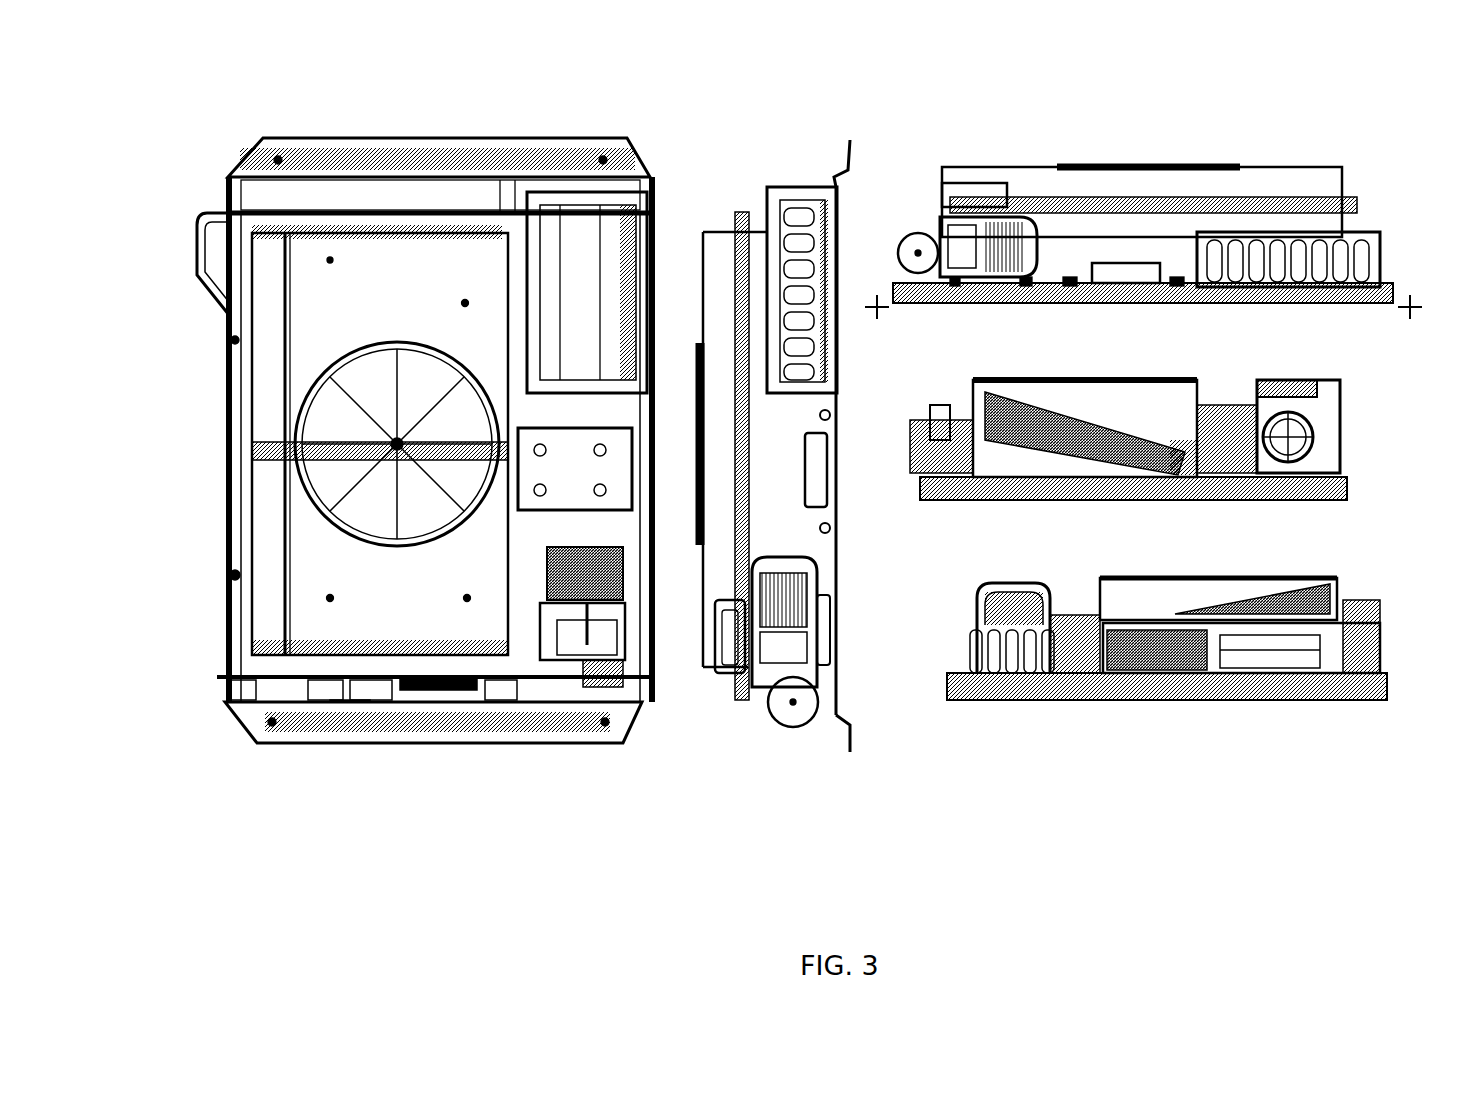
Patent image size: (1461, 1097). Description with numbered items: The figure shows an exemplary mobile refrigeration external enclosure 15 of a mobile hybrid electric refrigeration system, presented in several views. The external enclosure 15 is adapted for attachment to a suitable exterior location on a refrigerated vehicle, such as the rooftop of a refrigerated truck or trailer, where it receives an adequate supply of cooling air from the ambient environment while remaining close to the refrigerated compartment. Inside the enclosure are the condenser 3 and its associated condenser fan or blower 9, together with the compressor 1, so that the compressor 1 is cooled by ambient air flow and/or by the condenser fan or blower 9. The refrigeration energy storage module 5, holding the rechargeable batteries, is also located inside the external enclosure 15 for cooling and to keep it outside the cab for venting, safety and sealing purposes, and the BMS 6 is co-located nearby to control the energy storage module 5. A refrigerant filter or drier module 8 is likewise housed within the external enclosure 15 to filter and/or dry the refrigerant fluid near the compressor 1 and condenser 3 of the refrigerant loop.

The compressor 1 is at (608, 688).
The condenser 3 is at (393, 295).
The refrigeration energy storage module 5 is at (549, 182).
The BMS 6 is at (628, 465).
The refrigerant filter or drier module 8 is at (352, 706).
The condenser fan or blower 9 is at (380, 408).
The mobile refrigeration external enclosure 15 is at (182, 745).